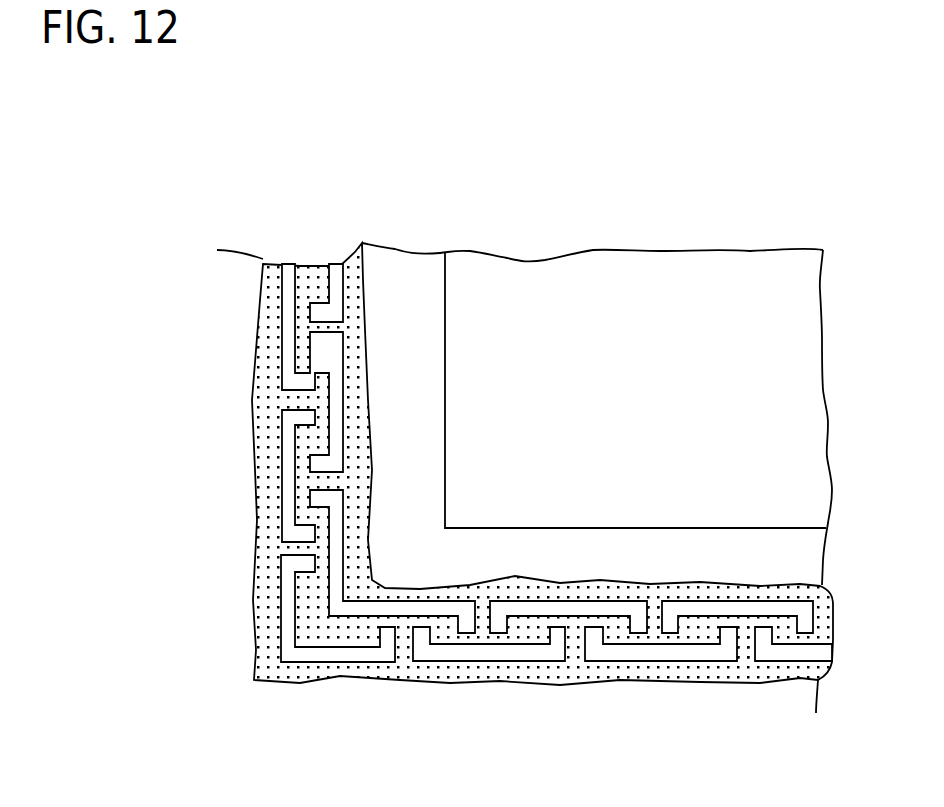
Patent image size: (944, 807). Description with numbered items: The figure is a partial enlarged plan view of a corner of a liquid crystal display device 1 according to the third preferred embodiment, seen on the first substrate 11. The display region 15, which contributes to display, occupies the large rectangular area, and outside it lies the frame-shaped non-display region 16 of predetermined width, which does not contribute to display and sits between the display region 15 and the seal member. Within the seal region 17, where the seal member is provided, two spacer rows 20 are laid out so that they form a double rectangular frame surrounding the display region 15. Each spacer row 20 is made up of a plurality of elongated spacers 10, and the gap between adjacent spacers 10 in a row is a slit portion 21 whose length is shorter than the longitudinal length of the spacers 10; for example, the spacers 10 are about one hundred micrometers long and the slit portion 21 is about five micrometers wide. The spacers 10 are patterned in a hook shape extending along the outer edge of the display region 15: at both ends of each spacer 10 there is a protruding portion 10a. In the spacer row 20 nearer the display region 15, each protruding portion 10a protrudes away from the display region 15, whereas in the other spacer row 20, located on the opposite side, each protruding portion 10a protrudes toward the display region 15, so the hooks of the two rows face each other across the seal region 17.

The liquid crystal display device 1 is at (172, 170).
The first substrate 11 is at (236, 250).
The display region 15 is at (633, 262).
The non-display region 16 is at (408, 262).
The seal region 17 is at (313, 270).
The spacer row 20 is at (326, 365).
The spacer 10 is at (335, 433).
The protruding portion 10a is at (422, 637).
The slit portion 21 is at (743, 647).